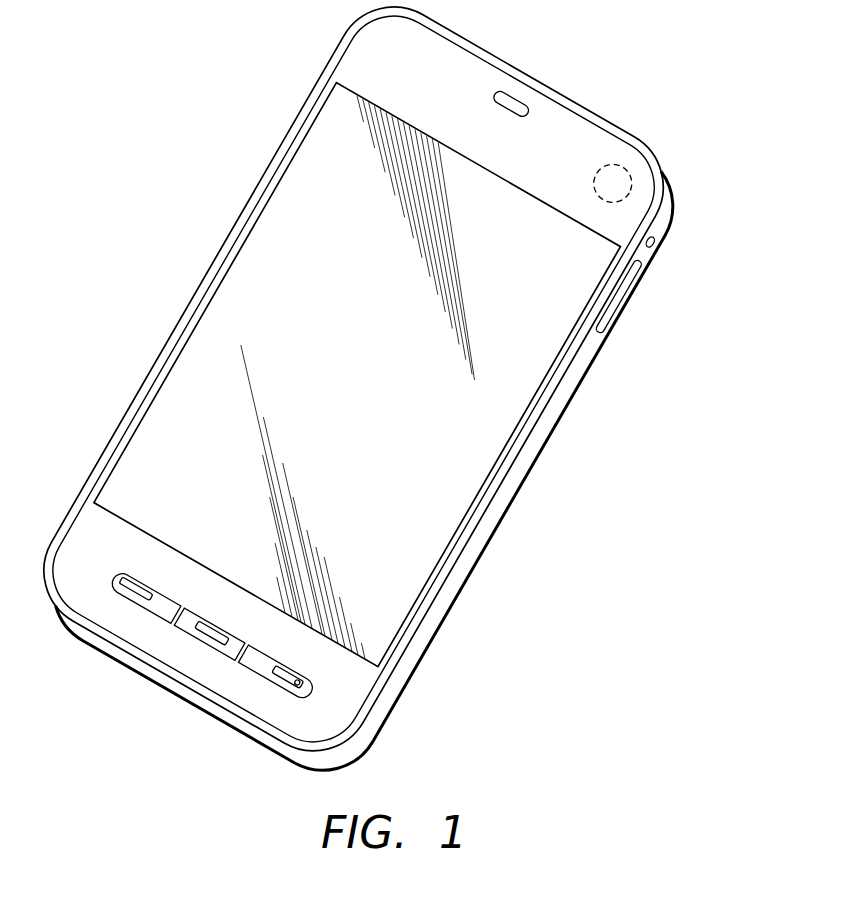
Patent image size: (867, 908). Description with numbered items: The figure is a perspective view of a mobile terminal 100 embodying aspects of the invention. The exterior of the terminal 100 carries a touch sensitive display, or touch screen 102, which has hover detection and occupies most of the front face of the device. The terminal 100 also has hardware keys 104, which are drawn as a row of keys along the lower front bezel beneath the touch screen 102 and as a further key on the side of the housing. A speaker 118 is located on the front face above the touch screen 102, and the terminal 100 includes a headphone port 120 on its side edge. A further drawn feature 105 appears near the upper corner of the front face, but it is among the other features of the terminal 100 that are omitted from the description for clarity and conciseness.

The terminal 100 is at (163, 222).
The touch screen 102 is at (465, 462).
The hardware keys 104 is at (623, 292).
The camera 105 is at (625, 155).
The speaker 118 is at (512, 98).
The headphone port 120 is at (658, 243).